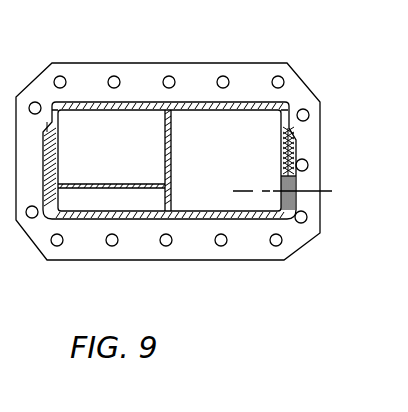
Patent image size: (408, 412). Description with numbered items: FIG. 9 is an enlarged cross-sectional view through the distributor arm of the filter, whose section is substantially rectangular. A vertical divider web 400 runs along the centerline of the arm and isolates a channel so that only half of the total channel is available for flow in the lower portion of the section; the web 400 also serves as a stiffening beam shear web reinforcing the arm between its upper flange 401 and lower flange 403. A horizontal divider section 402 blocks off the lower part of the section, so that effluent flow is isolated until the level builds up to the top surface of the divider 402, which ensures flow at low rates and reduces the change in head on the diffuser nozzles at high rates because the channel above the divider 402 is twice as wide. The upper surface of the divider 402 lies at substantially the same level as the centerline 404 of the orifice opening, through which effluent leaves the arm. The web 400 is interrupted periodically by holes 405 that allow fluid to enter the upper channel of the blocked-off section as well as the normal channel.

The divider web 400 is at (183, 103).
The upper flange 401 is at (92, 102).
The horizontal divider section 402 is at (98, 184).
The lower flange 403 is at (138, 220).
The centerline of the orifice opening 404 is at (325, 192).
The holes 405 is at (170, 118).